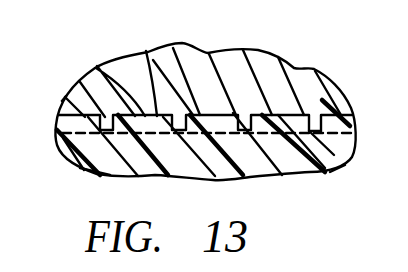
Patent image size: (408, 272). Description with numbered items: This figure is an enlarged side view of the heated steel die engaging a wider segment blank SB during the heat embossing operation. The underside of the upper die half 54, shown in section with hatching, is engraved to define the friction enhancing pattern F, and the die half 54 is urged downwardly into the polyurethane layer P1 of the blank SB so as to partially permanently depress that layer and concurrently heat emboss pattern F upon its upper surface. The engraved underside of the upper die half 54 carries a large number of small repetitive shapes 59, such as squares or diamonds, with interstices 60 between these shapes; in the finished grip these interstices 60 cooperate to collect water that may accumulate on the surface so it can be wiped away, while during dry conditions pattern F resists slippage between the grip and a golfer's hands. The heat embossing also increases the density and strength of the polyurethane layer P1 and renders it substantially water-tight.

The upper die half 54 is at (309, 42).
The friction enhancing pattern F is at (146, 51).
The small repetitive shapes 59 is at (93, 70).
The interstices 60 is at (62, 103).
The wider segment blank SB is at (110, 173).
The polyurethane layer P1 is at (330, 157).